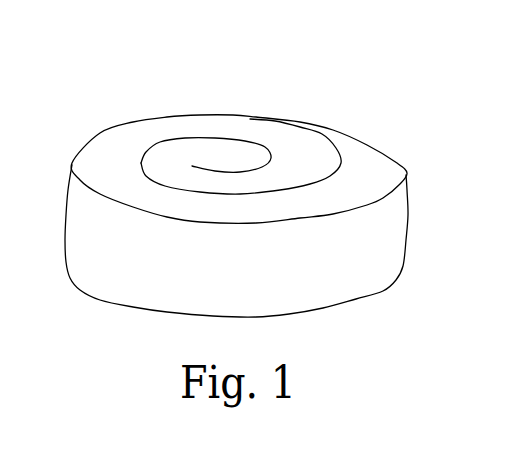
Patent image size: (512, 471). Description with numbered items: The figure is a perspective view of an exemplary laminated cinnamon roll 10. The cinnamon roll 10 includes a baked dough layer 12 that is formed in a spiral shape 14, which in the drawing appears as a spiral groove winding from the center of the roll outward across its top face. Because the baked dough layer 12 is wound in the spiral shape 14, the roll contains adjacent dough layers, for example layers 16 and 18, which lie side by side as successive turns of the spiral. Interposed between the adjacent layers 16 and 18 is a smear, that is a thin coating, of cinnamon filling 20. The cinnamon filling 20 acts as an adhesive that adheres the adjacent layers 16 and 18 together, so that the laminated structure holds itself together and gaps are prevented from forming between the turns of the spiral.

The cinnamon roll 10 is at (376, 86).
The baked dough layer 12 is at (411, 211).
The spiral shape 14 is at (103, 74).
The layer 16 is at (296, 163).
The layer 18 is at (386, 175).
The cinnamon filling 20 is at (327, 181).